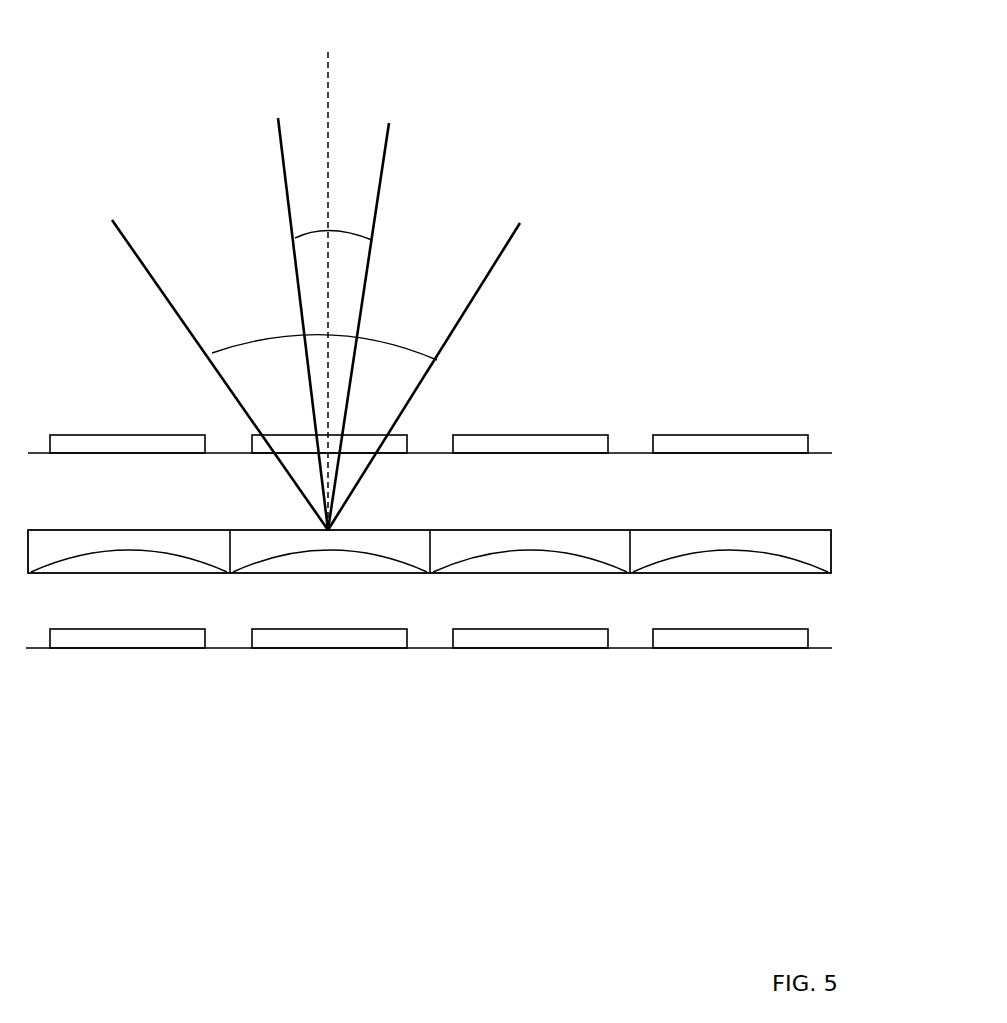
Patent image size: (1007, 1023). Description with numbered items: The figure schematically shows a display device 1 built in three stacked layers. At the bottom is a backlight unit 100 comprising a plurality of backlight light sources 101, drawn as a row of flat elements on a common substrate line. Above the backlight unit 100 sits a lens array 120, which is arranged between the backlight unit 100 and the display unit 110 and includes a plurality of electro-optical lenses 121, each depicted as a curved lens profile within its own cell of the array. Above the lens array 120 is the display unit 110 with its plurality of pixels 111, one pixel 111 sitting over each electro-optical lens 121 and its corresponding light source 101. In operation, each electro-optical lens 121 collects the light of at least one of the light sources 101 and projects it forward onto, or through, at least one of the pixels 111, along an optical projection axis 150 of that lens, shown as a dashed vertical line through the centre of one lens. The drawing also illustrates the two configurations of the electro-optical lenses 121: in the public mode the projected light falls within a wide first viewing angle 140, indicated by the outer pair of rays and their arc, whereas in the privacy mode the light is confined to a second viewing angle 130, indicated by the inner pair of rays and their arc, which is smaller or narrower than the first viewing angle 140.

The display device 1 is at (718, 106).
The backlight unit 100 is at (812, 718).
The backlight light source 101 is at (120, 650).
The display unit 110 is at (803, 362).
The pixel 111 is at (252, 438).
The lens array 120 is at (840, 570).
The electro-optical lens 121 is at (230, 528).
The second viewing angle 130 is at (355, 247).
The first viewing angle 140 is at (397, 367).
The optical projection axis 150 is at (337, 88).